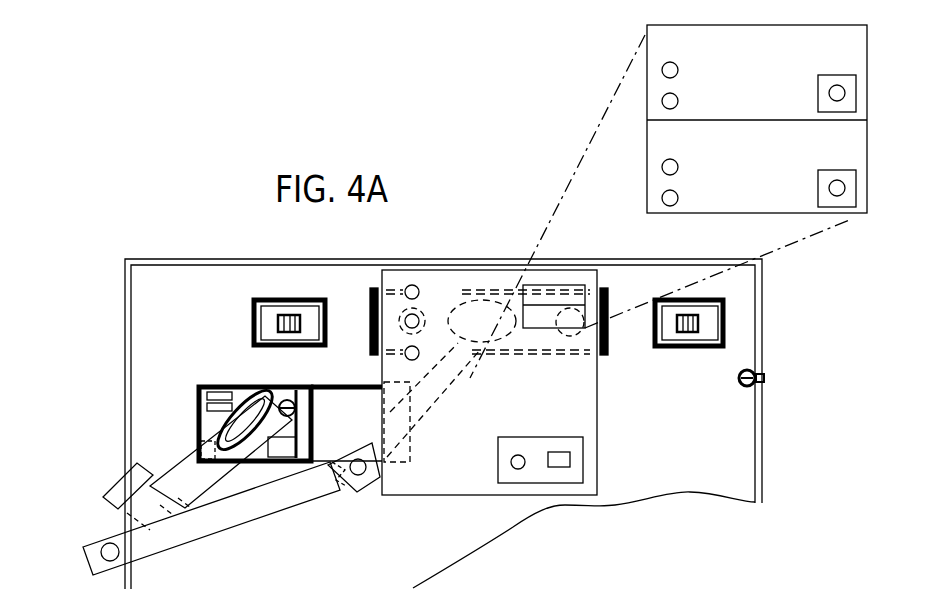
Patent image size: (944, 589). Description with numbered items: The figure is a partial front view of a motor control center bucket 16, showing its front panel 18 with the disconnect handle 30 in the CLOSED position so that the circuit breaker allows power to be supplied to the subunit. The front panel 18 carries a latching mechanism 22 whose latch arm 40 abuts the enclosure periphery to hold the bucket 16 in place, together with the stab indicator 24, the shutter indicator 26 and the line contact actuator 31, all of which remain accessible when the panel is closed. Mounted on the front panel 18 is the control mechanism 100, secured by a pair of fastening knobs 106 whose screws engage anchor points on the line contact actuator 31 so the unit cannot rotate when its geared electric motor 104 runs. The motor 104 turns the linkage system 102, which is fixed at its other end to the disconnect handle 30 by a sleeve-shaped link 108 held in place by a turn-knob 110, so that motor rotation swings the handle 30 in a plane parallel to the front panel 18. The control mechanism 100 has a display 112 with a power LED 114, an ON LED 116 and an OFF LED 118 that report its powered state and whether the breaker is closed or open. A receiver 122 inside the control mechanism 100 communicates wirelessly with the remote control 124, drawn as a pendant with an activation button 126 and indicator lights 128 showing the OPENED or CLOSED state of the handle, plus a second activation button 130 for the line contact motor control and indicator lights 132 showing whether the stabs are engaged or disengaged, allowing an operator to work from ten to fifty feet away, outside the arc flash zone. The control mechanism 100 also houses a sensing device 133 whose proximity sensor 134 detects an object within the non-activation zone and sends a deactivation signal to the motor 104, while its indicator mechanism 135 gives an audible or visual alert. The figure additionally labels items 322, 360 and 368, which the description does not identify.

The bucket 16 is at (112, 330).
The front panel 18 is at (646, 488).
The latching mechanism 22 is at (742, 386).
The stab indicator 24 is at (265, 303).
The shutter indicator 26 is at (716, 310).
The disconnect handle 30 is at (226, 421).
The line contact actuator 31 is at (614, 356).
The latch arm 40 is at (766, 378).
The control mechanism 100 is at (472, 497).
The linkage system 102 is at (266, 527).
The geared electric motor 104 is at (517, 354).
The fastening knob 106 is at (555, 337).
The sleeve-shaped link 108 is at (99, 524).
The turn-knob 110 is at (116, 481).
The display 112 is at (370, 300).
The power LED 114 is at (402, 330).
The ON LED 116 is at (417, 288).
The OFF LED 118 is at (405, 359).
The receiver 122 is at (581, 282).
The remote control 124 is at (618, 41).
The activation button 126 is at (843, 74).
The indicator lights 128 is at (641, 87).
The activation button 130 is at (831, 212).
The indicator lights 132 is at (642, 179).
The sensing device 133 is at (491, 455).
The proximity sensor 134 is at (512, 467).
The indicator mechanism 135 is at (548, 458).
The power indicator region 322 is at (513, 280).
The first switch 360 is at (280, 321).
The second switch 368 is at (695, 332).